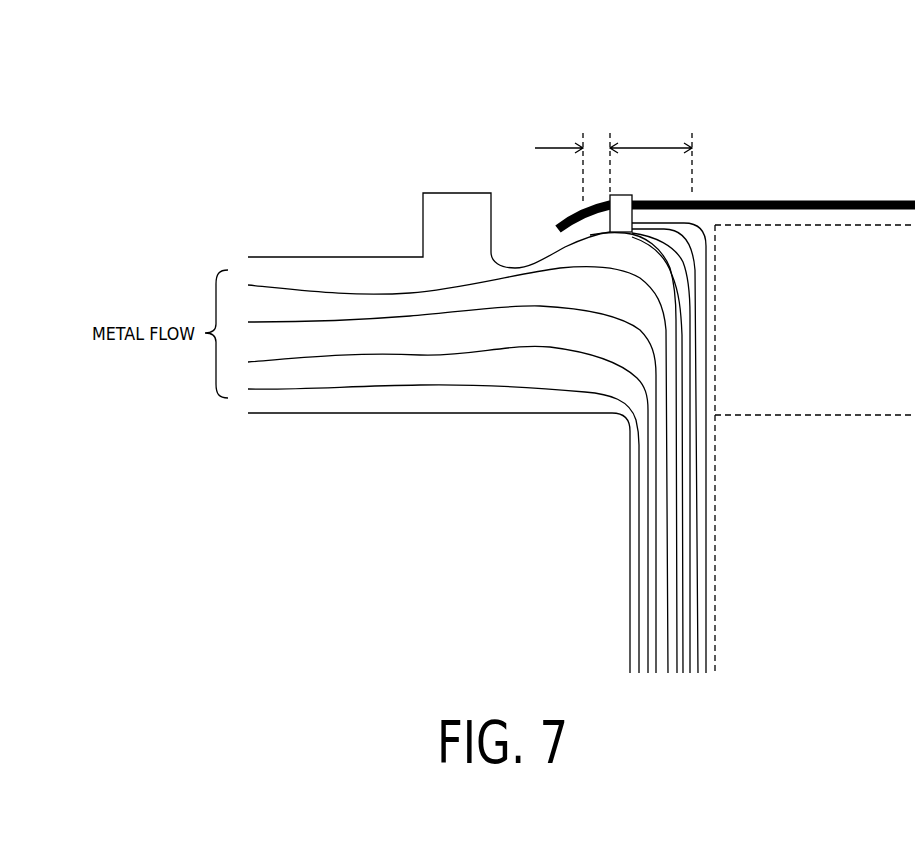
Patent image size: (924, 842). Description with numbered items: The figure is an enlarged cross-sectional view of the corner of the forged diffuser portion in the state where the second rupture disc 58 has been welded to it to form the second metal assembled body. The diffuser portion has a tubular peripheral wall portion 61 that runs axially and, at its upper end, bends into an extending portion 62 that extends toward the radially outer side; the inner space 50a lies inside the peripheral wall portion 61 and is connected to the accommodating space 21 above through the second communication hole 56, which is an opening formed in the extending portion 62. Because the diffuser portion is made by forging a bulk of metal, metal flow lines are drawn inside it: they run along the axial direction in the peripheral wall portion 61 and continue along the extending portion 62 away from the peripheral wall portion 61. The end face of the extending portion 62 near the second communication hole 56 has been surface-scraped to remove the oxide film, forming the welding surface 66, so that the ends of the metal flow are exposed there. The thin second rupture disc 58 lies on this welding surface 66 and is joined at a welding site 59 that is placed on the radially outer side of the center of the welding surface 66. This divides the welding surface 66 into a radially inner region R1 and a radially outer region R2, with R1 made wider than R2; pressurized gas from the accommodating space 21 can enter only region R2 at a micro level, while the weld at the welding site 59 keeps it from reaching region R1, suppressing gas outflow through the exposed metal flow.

The accommodating space 21 is at (817, 135).
The second rupture disc 58 is at (886, 200).
The welding site 59 is at (625, 194).
The second communication hole 56 is at (816, 370).
The inner space 50a is at (822, 550).
The peripheral wall portion 61 is at (632, 630).
The extending portion 62 is at (418, 398).
The welding surface 66 is at (702, 240).
The region R1 is at (656, 147).
The region R2 is at (591, 147).